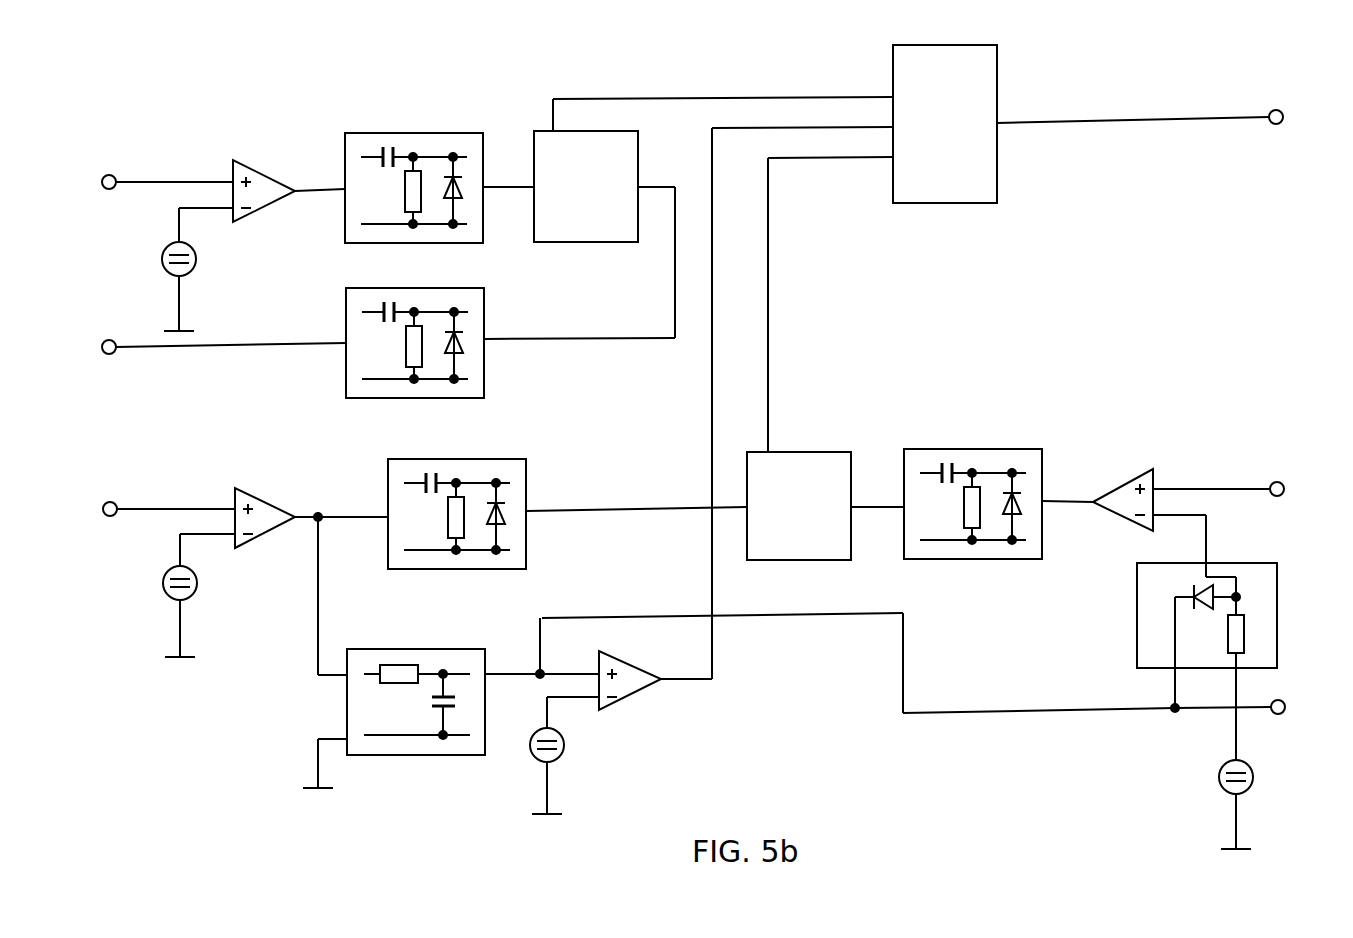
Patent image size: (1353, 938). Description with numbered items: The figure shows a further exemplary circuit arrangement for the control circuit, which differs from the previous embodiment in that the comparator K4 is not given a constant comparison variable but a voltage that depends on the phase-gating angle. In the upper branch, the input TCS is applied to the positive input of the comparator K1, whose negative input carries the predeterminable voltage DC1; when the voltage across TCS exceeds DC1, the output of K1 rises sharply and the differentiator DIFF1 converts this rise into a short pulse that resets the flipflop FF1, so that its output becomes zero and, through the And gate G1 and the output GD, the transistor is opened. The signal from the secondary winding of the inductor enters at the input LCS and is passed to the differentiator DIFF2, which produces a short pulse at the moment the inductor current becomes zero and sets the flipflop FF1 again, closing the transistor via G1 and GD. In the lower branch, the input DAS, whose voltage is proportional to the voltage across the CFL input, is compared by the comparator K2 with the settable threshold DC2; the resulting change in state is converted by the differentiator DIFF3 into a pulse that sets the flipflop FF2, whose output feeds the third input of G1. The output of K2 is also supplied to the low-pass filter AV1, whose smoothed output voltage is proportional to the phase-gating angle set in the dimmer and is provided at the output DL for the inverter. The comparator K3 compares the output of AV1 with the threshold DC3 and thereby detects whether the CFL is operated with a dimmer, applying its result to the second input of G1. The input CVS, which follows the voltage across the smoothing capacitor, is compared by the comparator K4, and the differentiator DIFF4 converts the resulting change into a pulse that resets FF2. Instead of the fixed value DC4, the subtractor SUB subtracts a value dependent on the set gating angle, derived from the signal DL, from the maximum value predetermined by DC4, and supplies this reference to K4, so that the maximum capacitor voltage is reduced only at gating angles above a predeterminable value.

The input TCS is at (141, 182).
The input LCS is at (198, 347).
The input DAS is at (142, 509).
The input CVS is at (1244, 489).
The output GD is at (1162, 112).
The output DL is at (934, 666).
The comparator K1 is at (289, 183).
The comparator K2 is at (311, 573).
The comparator K3 is at (655, 419).
The comparator K4 is at (1179, 510).
The predeterminable voltage DC1 is at (206, 269).
The threshold voltage DC2 is at (206, 595).
The threshold voltage DC3 is at (573, 767).
The voltage DC4 is at (1262, 804).
The differentiator DIFF1 is at (439, 174).
The differentiator DIFF2 is at (510, 278).
The differentiator DIFF3 is at (567, 500).
The differentiator DIFF4 is at (998, 490).
The flipflop FF1 is at (713, 156).
The flipflop FF2 is at (825, 359).
The And gate G1 is at (854, 111).
The low-pass filter AV1 is at (451, 703).
The subtractor SUB is at (1183, 661).